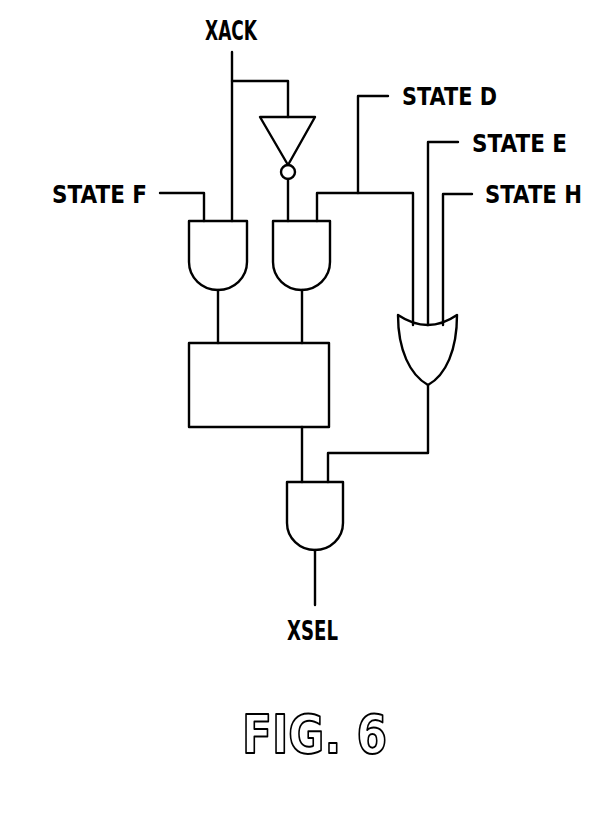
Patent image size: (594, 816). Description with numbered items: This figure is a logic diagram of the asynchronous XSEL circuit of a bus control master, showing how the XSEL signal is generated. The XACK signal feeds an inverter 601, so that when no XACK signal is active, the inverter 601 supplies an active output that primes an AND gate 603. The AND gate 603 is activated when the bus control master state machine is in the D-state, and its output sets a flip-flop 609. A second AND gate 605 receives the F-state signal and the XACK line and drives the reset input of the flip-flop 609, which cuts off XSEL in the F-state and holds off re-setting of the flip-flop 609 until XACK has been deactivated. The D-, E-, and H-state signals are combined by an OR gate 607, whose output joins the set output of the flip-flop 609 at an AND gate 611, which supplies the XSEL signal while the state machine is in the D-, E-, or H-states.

The inverter 601 is at (313, 117).
The AND gate 603 is at (332, 240).
The AND gate 605 is at (187, 257).
The OR gate 607 is at (457, 330).
The flip-flop 609 is at (190, 387).
The AND gate 611 is at (287, 498).